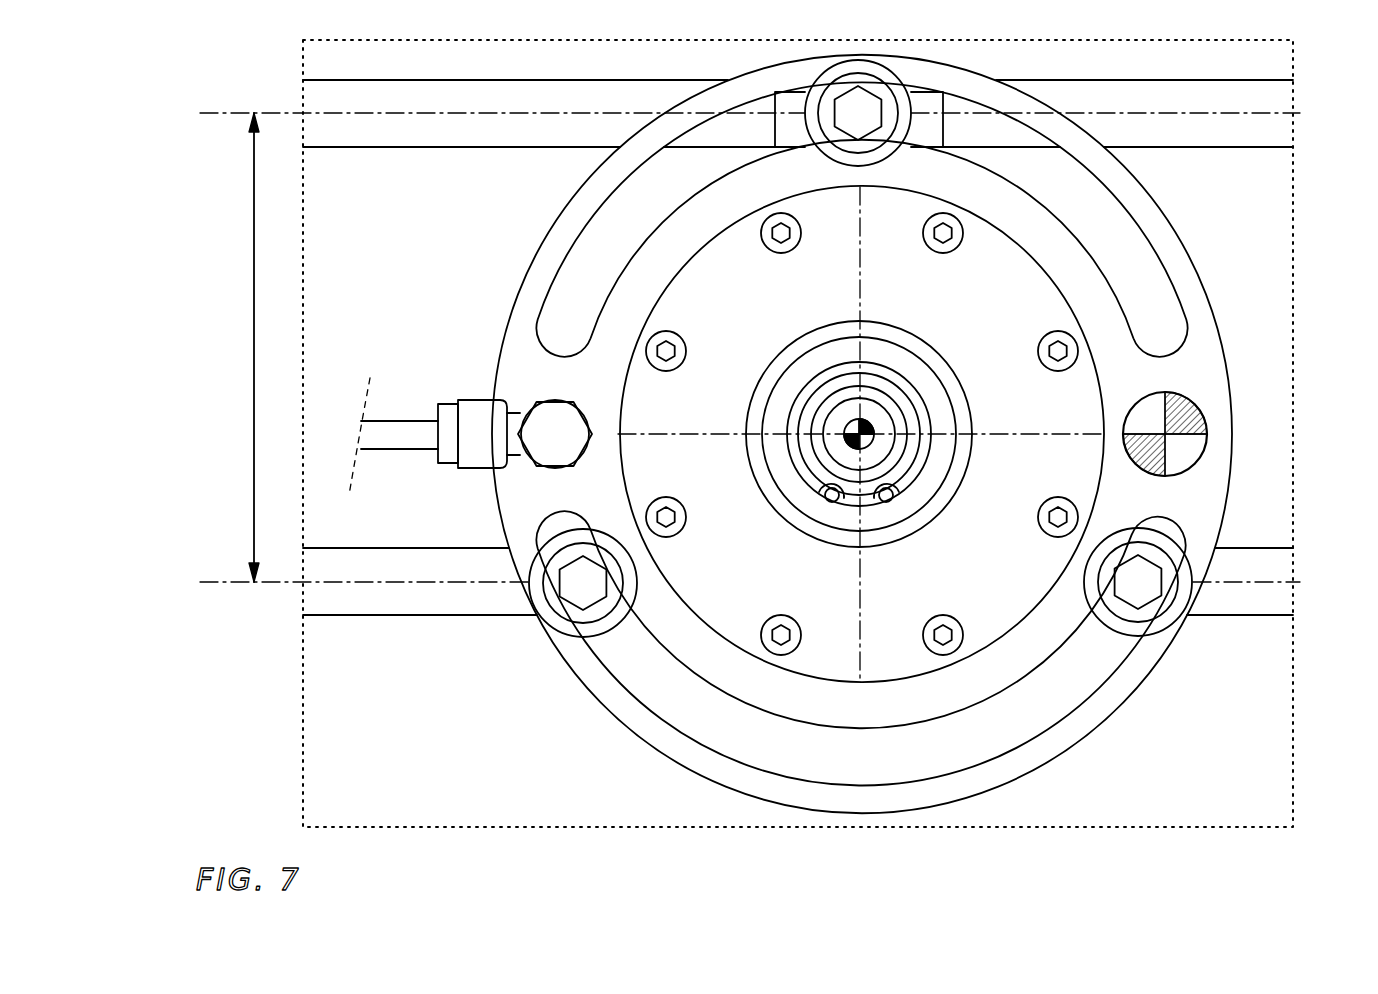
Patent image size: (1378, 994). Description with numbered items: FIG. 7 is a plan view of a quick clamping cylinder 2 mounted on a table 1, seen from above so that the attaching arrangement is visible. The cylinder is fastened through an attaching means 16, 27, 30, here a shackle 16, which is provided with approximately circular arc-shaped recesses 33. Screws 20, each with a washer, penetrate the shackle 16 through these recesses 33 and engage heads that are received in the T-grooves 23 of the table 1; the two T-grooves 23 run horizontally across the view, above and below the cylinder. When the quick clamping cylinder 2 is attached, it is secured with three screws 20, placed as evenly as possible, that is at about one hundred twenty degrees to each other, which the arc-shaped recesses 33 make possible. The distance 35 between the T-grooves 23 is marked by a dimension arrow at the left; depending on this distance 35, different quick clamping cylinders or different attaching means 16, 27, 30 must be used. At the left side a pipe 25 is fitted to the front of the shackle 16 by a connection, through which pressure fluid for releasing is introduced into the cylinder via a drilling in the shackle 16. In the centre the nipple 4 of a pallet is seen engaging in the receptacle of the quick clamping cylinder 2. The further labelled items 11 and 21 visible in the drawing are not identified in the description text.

The table 1 is at (1268, 70).
The T-groove 23 is at (1252, 136).
The circular arc-shaped recesses 33 is at (1120, 262).
The shackle 16 is at (1236, 374).
The attaching means 27 is at (1236, 374).
The attaching means 30 is at (1200, 370).
The plate 11 is at (917, 474).
The quick clamping cylinder 2 is at (1018, 572).
The mounting block 21 is at (837, 70).
The screws 20 is at (865, 118).
The nipple 4 is at (545, 420).
The pipe 25 is at (396, 433).
The distance 35 is at (254, 433).